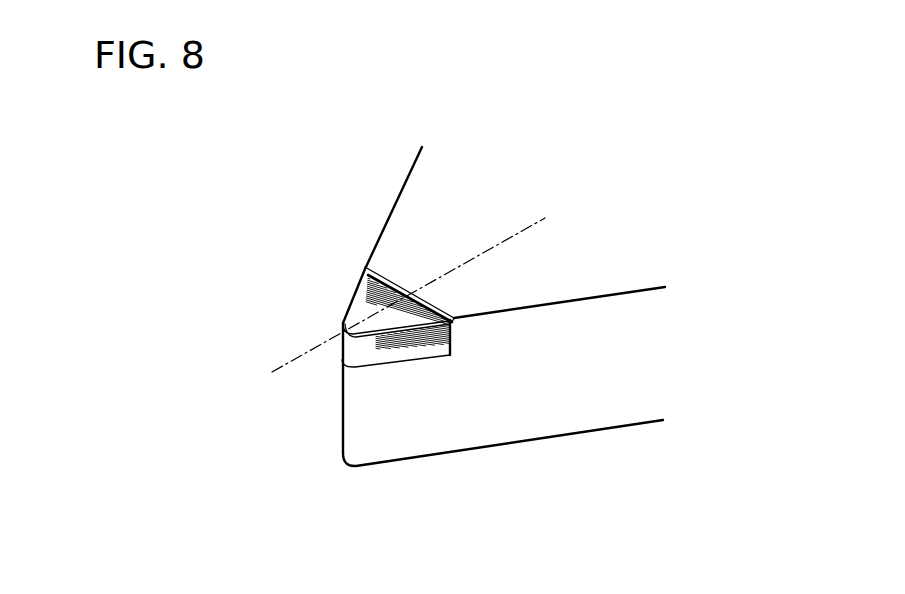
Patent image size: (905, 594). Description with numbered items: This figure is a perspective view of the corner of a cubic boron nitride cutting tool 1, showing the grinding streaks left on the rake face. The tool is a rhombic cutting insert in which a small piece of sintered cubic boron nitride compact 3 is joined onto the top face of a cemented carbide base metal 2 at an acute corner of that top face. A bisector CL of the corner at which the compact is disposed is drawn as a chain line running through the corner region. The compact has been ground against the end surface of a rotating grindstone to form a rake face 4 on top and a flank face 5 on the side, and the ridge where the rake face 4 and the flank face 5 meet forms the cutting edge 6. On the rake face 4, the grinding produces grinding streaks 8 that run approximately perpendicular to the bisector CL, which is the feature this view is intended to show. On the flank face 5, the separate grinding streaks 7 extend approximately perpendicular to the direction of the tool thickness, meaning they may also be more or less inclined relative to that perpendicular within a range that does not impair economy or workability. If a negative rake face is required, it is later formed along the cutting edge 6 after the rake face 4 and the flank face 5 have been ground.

The cubic boron nitride cutting tool 1 is at (573, 270).
The base metal 2 is at (548, 395).
The sintered cubic boron nitride compact 3 is at (341, 346).
The rake face 4 is at (355, 309).
The flank face 5 is at (373, 353).
The cutting edge 6 is at (342, 324).
The grinding streaks 7 is at (429, 352).
The grinding streaks 8 is at (378, 279).
The bisector CL is at (425, 283).